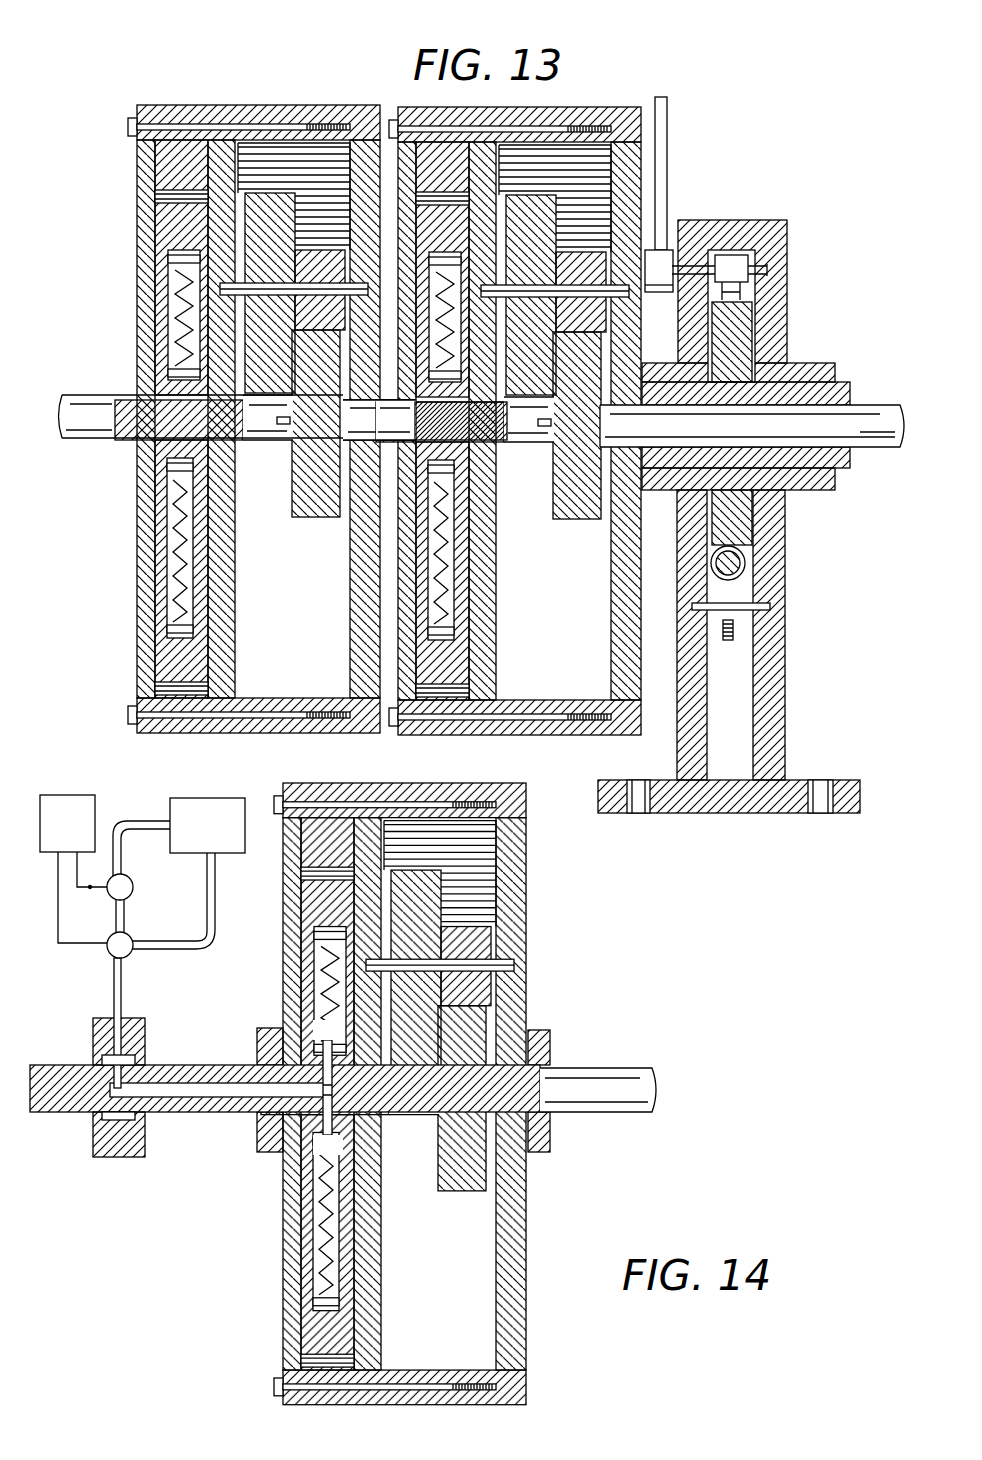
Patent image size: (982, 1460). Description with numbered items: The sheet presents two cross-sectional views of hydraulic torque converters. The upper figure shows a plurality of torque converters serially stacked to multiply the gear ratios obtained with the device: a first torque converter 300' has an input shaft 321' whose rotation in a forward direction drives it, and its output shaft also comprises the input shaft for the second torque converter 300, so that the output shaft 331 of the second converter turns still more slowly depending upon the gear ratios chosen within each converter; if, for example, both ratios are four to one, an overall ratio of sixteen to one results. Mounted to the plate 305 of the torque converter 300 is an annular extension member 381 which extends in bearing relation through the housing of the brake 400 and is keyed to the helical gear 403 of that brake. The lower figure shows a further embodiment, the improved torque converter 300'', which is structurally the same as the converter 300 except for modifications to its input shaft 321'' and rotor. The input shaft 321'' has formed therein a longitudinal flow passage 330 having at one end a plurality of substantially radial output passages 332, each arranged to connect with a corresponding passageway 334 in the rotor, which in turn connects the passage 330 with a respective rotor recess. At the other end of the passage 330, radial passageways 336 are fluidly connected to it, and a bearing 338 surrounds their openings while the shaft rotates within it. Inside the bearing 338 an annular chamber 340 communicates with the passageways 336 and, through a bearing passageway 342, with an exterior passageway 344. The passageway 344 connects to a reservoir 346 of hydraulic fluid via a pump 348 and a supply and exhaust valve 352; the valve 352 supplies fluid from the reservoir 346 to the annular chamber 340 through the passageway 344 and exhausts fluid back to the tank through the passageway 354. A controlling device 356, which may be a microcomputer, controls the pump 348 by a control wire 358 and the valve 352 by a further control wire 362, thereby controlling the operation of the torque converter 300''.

In FIG. 13, the torque converter 300' is at (247, 372).
In FIG. 13, the torque converter 300 is at (520, 373).
In FIG. 14, the improved torque converter 300'' is at (467, 1094).
In FIG. 13, the plate 305 is at (633, 160).
In FIG. 13, the brake 400 is at (730, 469).
In FIG. 13, the helical gear 403 is at (776, 312).
In FIG. 13, the annular extension member 381 is at (838, 392).
In FIG. 13, the input shaft 321' is at (237, 449).
In FIG. 14, the input shaft 321'' is at (343, 1117).
In FIG. 13, the output shaft 331 is at (875, 438).
In FIG. 14, the longitudinal flow passage 330 is at (215, 1092).
In FIG. 14, the output passages 332 is at (322, 1080).
In FIG. 14, the passageway 334 is at (328, 1042).
In FIG. 14, the passageways 336 is at (118, 1072).
In FIG. 14, the bearing 338 is at (140, 1015).
In FIG. 14, the annular chamber 340 is at (106, 1060).
In FIG. 14, the bearing passageway 342 is at (132, 1040).
In FIG. 14, the exterior passageway 344 is at (146, 822).
In FIG. 14, the reservoir 346 is at (205, 805).
In FIG. 14, the pump 348 is at (134, 888).
In FIG. 14, the supply and exhaust valve 352 is at (130, 934).
In FIG. 14, the passageway 354 is at (214, 908).
In FIG. 14, the controlling device 356 is at (60, 805).
In FIG. 14, the control wire 358 is at (92, 885).
In FIG. 14, the control wire 362 is at (80, 935).